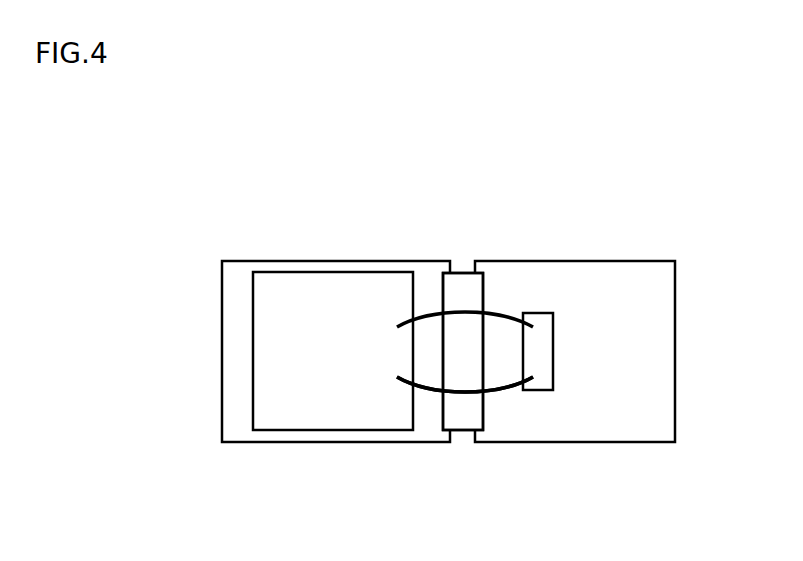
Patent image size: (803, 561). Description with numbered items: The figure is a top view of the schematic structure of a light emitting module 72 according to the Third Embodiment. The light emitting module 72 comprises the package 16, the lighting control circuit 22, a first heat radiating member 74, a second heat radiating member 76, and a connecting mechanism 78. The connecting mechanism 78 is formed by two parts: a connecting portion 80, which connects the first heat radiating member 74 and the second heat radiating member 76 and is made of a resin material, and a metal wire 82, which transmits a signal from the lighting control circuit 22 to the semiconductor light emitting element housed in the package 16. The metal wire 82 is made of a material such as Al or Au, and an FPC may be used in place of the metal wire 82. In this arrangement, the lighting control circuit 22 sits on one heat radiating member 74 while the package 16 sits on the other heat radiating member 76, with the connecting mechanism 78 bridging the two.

The first heat radiating member 74 is at (272, 260).
The lighting control circuit 22 is at (348, 272).
The second heat radiating member 76 is at (625, 260).
The light emitting module 72 is at (470, 240).
The connecting portion 80 is at (462, 431).
The package 16 is at (545, 313).
The connecting mechanism 78 is at (437, 400).
The metal wire 82 is at (505, 391).